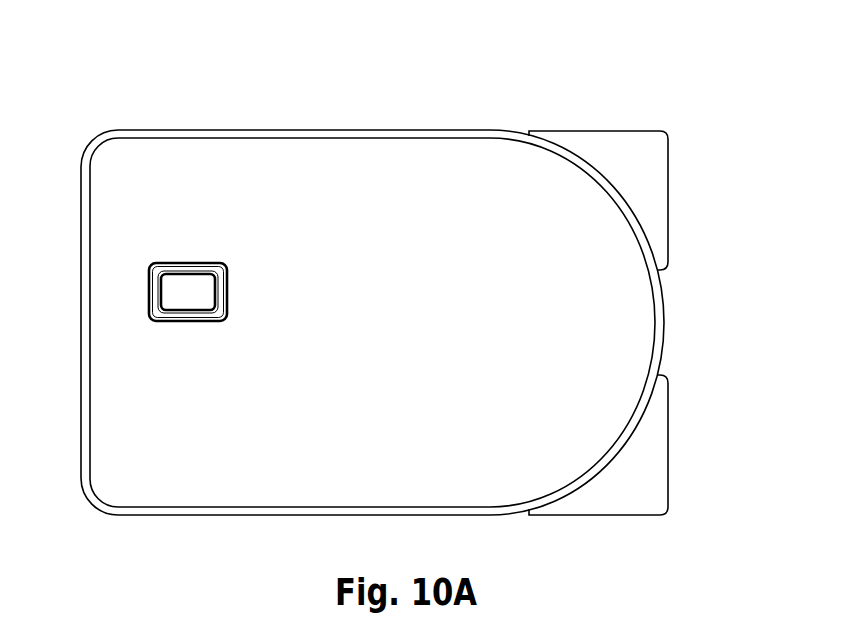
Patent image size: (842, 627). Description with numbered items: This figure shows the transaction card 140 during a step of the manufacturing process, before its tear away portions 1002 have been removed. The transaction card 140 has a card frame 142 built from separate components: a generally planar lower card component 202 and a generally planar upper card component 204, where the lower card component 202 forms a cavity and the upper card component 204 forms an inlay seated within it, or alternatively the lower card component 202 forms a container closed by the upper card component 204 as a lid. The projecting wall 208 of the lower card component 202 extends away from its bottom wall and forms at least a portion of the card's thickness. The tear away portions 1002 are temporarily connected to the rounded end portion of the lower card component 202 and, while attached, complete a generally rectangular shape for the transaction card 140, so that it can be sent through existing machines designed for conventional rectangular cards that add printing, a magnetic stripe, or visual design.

The transaction card 140 is at (109, 87).
The card frame 142 is at (231, 167).
The lower card component 202 is at (422, 130).
The upper card component 204 is at (306, 167).
The projecting wall 208 is at (481, 133).
The tear away portions 1002 is at (660, 138).